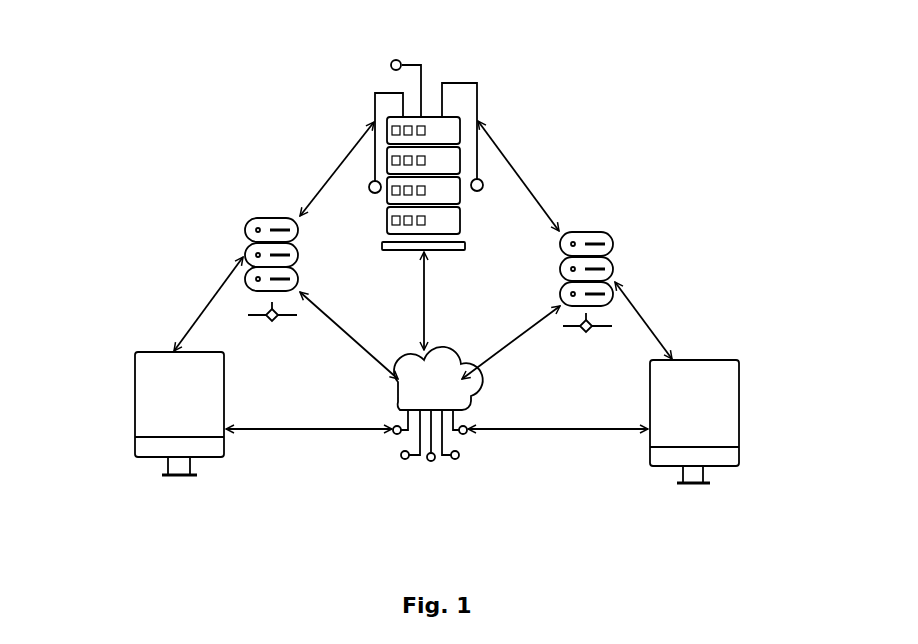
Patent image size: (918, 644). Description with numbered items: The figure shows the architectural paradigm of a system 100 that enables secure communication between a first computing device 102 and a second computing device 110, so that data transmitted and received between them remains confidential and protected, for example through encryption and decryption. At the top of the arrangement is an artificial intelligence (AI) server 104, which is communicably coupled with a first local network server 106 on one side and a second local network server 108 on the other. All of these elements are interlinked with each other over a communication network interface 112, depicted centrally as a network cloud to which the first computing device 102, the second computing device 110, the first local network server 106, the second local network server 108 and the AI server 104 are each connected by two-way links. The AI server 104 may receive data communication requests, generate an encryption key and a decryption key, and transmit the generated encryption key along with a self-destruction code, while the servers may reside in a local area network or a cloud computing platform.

The system 100 is at (467, 54).
The first computing device 102 is at (133, 410).
The artificial intelligence (AI) server 104 is at (483, 86).
The first local network server 106 is at (245, 222).
The second local network server 108 is at (616, 242).
The second computing device 110 is at (742, 423).
The communication network interface 112 is at (436, 461).